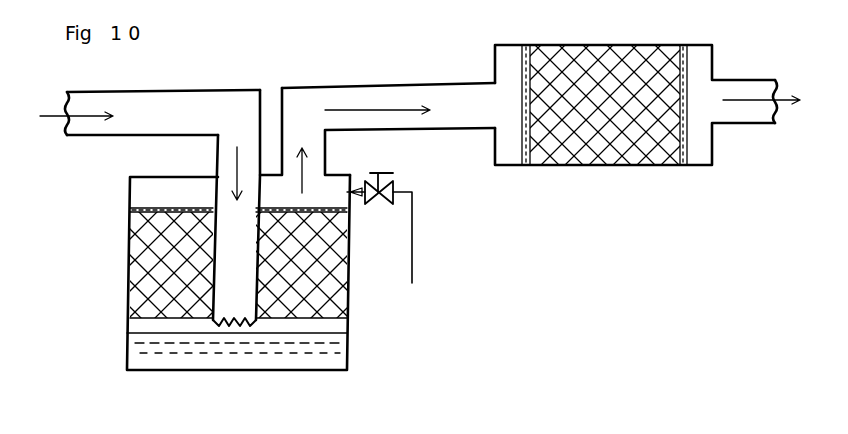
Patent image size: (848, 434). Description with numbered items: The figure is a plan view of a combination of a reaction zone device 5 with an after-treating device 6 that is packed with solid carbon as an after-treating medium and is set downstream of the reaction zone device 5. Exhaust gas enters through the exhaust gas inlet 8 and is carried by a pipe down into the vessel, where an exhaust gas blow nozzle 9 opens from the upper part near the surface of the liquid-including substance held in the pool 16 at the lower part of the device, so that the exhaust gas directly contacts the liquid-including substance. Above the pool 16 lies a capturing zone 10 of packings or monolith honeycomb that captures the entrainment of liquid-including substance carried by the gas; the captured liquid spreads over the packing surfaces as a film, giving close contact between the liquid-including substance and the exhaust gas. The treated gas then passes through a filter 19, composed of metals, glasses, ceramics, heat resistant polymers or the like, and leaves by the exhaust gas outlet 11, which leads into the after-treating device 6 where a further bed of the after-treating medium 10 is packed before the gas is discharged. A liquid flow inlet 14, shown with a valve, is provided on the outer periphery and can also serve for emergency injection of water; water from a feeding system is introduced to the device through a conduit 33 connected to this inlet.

The reaction zone device 5 is at (127, 277).
The after-treating device 6 is at (570, 165).
The exhaust gas inlet 8 is at (85, 108).
The exhaust gas blow nozzle 9 is at (222, 320).
The capturing zone 10 is at (157, 297).
The exhaust gas outlet 11 is at (377, 102).
The liquid flow inlet 14 is at (352, 195).
The pool 16 is at (127, 353).
The filter 19 is at (145, 210).
The conduit 33 is at (412, 243).